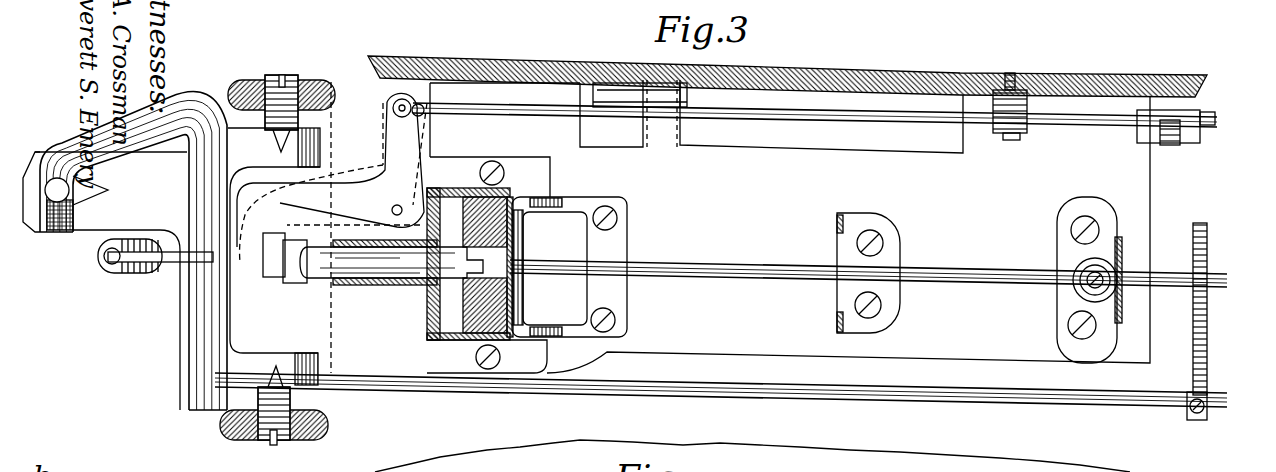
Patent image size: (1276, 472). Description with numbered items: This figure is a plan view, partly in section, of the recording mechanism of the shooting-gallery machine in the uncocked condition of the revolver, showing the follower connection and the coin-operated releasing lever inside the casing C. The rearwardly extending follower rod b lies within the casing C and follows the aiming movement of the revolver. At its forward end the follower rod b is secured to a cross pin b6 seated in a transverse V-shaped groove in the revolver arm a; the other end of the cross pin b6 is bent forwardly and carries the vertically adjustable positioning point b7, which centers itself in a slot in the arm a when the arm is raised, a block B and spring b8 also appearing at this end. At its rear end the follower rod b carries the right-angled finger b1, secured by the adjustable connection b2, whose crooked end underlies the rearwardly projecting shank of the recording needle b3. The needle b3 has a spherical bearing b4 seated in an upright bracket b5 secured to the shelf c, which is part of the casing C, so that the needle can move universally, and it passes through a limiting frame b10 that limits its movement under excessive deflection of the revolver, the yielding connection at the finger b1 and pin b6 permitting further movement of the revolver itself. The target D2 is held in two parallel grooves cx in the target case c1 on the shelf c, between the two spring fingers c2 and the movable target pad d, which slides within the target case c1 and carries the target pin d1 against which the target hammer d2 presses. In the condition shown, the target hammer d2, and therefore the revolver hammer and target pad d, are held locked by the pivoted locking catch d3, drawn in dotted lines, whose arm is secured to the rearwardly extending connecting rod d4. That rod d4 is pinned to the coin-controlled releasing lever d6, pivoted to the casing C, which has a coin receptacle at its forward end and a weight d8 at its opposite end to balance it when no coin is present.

The clamp block B is at (250, 84).
The casing C is at (893, 72).
The arm a is at (177, 269).
The follower rod b is at (744, 392).
The right-angled finger b1 is at (1208, 357).
The adjustable connection b2 is at (1208, 395).
The recording needle b3 is at (943, 273).
The spherical bearing b4 is at (1077, 292).
The upright bracket b5 is at (1117, 240).
The cross pin b6 is at (200, 332).
The positioning point b7 is at (53, 225).
The spring b8 is at (136, 270).
The limiting frame b10 is at (853, 223).
The shelf c is at (790, 226).
The target case c1 is at (508, 157).
The parallel grooves cx is at (508, 192).
The spring fingers c2 is at (567, 206).
The target pad d is at (502, 342).
The target pin d1 is at (320, 282).
The target hammer d2 is at (291, 284).
The locking catch d3 is at (266, 270).
The connecting rod d4 is at (665, 125).
The releasing lever d6 is at (1083, 117).
The weight d8 is at (1192, 137).
The target D2 is at (508, 290).